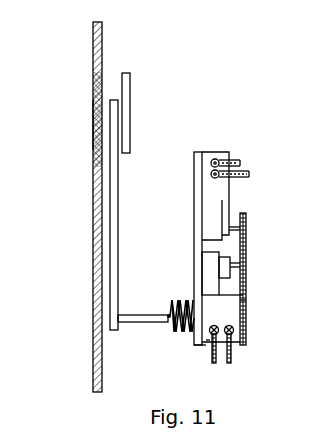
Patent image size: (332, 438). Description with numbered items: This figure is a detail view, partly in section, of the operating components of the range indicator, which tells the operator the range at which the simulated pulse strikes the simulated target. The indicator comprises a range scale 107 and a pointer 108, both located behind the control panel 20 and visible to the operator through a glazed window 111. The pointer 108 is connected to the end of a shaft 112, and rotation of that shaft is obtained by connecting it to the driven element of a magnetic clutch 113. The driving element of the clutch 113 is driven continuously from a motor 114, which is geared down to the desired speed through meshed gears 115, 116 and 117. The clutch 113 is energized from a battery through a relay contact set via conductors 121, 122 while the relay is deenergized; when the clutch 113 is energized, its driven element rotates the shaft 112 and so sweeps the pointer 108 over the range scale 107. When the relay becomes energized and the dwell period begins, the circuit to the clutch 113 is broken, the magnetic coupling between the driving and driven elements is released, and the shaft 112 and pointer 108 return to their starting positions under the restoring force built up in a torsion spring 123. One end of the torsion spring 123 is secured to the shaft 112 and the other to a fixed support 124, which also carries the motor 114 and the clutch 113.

The control panel 20 is at (93, 35).
The glazed window 111 is at (93, 120).
The range scale 107 is at (129, 97).
The pointer 108 is at (118, 192).
The shaft 112 is at (130, 313).
The torsion spring 123 is at (178, 332).
The fixed support 124 is at (194, 218).
The motor 114 is at (216, 193).
The gear 115 is at (246, 223).
The gear 116 is at (246, 258).
The gear 117 is at (246, 310).
The conductor 121 is at (234, 352).
The conductor 122 is at (221, 365).
The magnetic clutch 113 is at (211, 335).